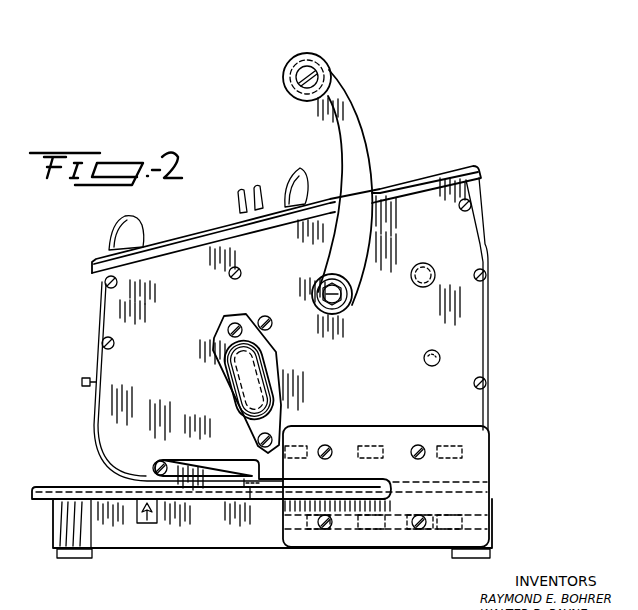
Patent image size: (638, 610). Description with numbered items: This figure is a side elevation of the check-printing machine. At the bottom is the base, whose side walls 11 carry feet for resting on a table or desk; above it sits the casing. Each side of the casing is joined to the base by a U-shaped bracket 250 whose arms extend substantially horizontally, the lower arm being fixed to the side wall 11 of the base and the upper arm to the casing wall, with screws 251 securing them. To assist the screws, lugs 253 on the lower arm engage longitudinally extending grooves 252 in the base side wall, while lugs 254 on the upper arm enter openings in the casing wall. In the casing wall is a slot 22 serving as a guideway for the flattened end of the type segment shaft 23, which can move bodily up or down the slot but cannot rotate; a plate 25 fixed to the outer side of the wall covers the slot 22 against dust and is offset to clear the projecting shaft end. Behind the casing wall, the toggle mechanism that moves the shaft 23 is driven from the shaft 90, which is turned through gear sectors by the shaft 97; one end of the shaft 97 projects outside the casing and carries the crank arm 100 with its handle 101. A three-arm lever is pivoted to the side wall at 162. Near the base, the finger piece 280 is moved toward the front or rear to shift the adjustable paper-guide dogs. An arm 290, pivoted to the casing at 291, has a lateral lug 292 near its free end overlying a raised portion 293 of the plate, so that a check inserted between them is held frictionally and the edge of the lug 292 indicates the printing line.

The side walls 11 is at (200, 548).
The slots 22 is at (244, 378).
The shaft 23 is at (222, 345).
The plates 25 is at (270, 337).
The shaft 90 is at (429, 266).
The shaft 97 is at (314, 292).
The crank arm 100 is at (358, 142).
The handle 101 is at (328, 65).
The pivot 162 is at (428, 366).
The U-shaped brackets 250 is at (476, 468).
The screws 251 is at (413, 458).
The grooves 252 is at (476, 520).
The lugs 253 is at (425, 535).
The lugs 254 is at (444, 446).
The finger piece 280 is at (150, 530).
The arms 290 is at (195, 463).
The pivot 291 is at (158, 461).
The lateral lug 292 is at (241, 477).
The raised portion 293 is at (252, 490).